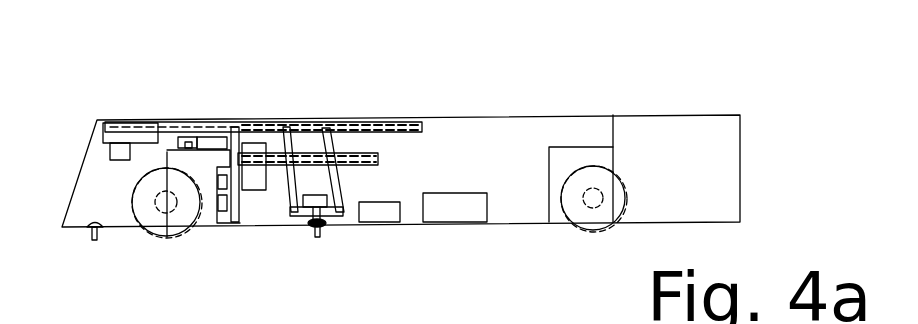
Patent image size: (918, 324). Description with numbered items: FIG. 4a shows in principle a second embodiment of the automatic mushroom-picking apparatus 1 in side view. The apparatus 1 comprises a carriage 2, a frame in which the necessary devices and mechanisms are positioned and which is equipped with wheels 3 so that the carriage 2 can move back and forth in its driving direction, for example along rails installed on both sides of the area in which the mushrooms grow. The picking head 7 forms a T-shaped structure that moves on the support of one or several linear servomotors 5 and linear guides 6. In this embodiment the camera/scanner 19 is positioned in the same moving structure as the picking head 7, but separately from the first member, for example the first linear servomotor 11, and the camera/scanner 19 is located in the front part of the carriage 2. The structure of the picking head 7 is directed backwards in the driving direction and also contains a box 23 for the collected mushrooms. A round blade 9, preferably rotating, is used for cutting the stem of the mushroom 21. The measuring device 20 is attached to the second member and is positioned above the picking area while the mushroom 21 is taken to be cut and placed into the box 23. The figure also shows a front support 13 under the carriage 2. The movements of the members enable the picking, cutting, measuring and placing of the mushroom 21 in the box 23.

The apparatus 1 is at (474, 82).
The carriage 2 is at (510, 116).
The wheels 3 is at (165, 237).
The linear servomotor 5 is at (218, 137).
The linear guide 6 is at (190, 147).
The picking head 7 is at (198, 132).
The round blade 9 is at (380, 223).
The first linear servomotor 11 is at (366, 318).
The front support 13 is at (218, 274).
The camera/scanner 19 is at (117, 150).
The measuring device 20 is at (253, 192).
The mushroom 21 is at (313, 237).
The box 23 is at (450, 222).